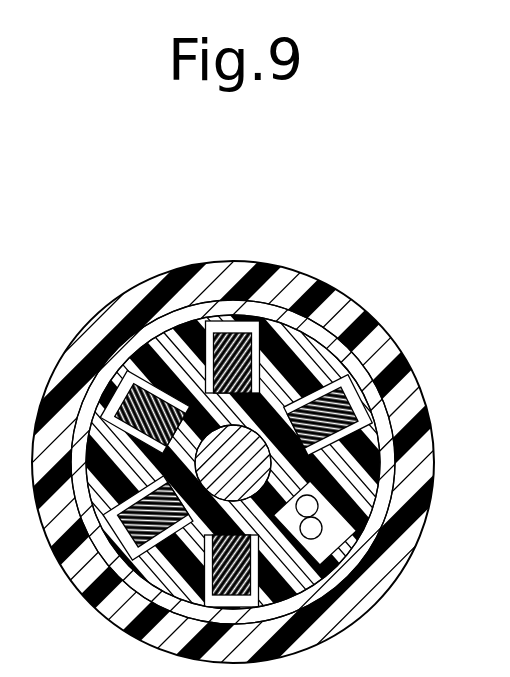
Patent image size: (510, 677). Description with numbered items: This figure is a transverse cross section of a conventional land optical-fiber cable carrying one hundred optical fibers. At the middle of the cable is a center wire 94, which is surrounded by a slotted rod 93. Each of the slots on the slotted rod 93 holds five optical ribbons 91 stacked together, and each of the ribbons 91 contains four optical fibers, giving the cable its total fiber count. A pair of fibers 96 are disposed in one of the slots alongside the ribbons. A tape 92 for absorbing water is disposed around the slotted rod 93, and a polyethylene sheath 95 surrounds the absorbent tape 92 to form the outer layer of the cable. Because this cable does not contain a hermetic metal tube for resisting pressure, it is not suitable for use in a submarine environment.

The optical ribbons 91 is at (246, 338).
The tape for absorbing water 92 is at (353, 366).
The slotted rod 93 is at (388, 403).
The center wire 94 is at (245, 468).
The polyethylene sheath 95 is at (397, 563).
The pair of fibers 96 is at (383, 573).